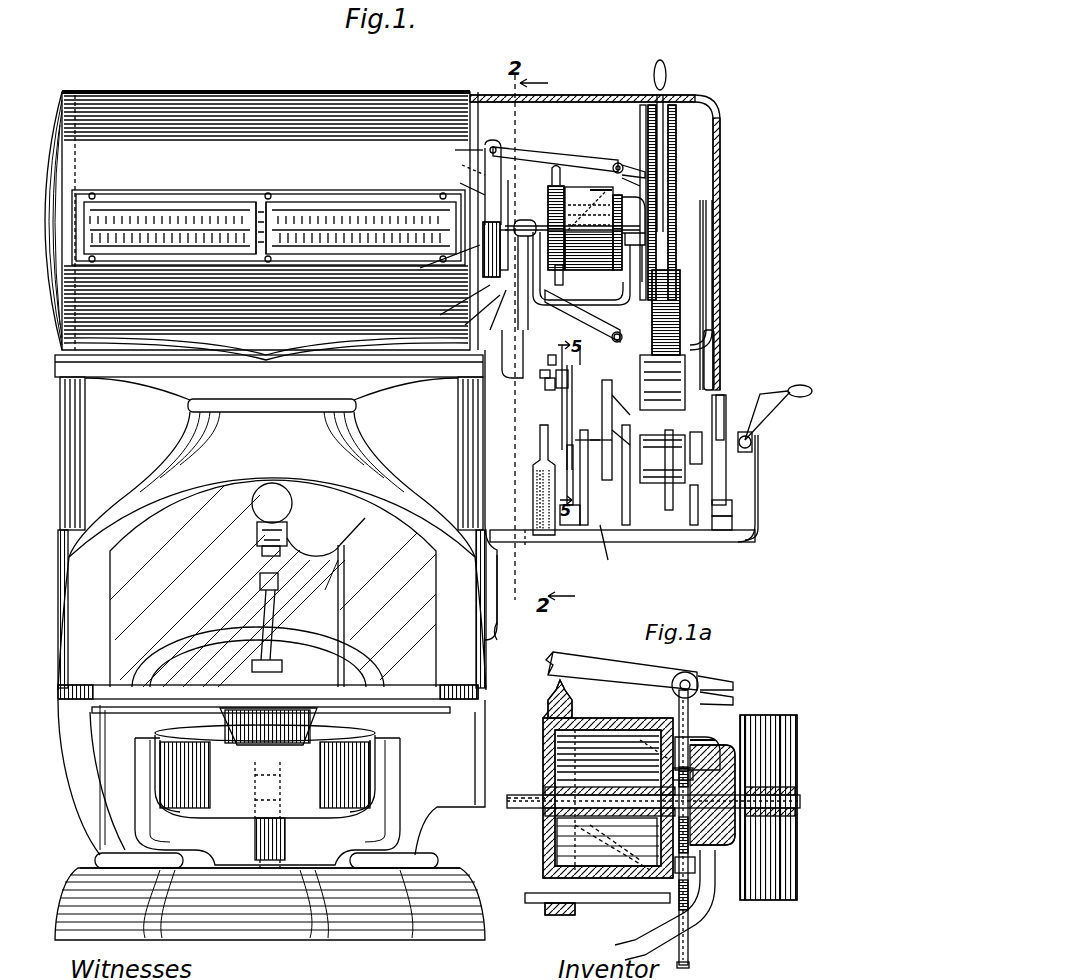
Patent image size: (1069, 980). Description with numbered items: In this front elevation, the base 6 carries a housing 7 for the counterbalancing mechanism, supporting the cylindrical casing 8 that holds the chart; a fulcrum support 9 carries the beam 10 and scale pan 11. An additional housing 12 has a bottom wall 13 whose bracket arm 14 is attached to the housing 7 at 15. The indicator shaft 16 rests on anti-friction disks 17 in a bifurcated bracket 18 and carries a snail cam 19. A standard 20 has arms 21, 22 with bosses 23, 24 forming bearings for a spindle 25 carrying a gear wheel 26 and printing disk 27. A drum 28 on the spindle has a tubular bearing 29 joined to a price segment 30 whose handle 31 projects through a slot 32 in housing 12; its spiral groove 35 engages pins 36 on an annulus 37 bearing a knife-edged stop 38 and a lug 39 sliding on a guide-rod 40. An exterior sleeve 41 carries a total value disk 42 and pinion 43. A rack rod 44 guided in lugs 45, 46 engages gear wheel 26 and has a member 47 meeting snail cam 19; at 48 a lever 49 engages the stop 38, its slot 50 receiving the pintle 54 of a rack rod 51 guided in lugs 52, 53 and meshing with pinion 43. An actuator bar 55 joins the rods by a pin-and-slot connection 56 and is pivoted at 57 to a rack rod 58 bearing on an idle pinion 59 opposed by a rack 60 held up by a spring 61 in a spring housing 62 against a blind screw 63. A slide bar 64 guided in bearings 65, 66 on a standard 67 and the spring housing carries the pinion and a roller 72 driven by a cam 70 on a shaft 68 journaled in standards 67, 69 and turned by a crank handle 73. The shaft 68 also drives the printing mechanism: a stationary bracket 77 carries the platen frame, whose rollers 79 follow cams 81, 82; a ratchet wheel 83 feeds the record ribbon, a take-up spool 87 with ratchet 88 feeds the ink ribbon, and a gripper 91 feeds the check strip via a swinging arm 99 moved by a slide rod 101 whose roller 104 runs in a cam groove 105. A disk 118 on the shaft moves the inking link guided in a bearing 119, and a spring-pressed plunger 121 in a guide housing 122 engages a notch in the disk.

In FIG. 1, the base 6 is at (462, 890).
In FIG. 1, the housing 7 is at (478, 692).
In FIG. 1, the cylindrical casing 8 is at (70, 96).
In FIG. 1, the fulcrum support 9 is at (400, 790).
In FIG. 1, the beam 10 is at (355, 730).
In FIG. 1, the scale pan 11 is at (60, 655).
In FIG. 1, the additional housing 12 is at (585, 95).
In FIG. 1, the bottom wall 13 is at (632, 542).
In FIG. 1, the bracket arm 14 is at (497, 575).
In FIG. 1, the attachment point 15 is at (500, 634).
In FIG. 1, the shaft 16 is at (235, 265).
In FIG. 1, the anti-friction disks 17 is at (408, 300).
In FIG. 1, the bifurcated bracket 18 is at (452, 308).
In FIG. 1, the snail cam 19 is at (465, 163).
In FIG. 1, the standard 20 is at (545, 385).
In FIG. 1, the arm of standard 21 is at (494, 316).
In FIG. 1, the arm of standard 22 is at (622, 332).
In FIG. 1A, the arm of standard 22 is at (705, 935).
In FIG. 1, the boss 23 is at (523, 218).
In FIG. 1, the boss 24 is at (622, 210).
In FIG. 1A, the boss 24 is at (655, 749).
In FIG. 1, the spindle 25 is at (510, 200).
In FIG. 1A, the spindle 25 is at (527, 808).
In FIG. 1, the gear wheel 26 is at (502, 232).
In FIG. 1, the printing disk 27 is at (658, 140).
In FIG. 1A, the printing disk 27 is at (790, 715).
In FIG. 1, the drum 28 is at (612, 186).
In FIG. 1A, the drum 28 is at (625, 730).
In FIG. 1, the tubular bearing 29 is at (645, 250).
In FIG. 1A, the tubular bearing 29 is at (708, 748).
In FIG. 1, the segment 30 is at (703, 240).
In FIG. 1A, the segment 30 is at (775, 900).
In FIG. 1, the handle 31 is at (665, 55).
In FIG. 1, the slot 32 is at (676, 110).
In FIG. 1, the spiral groove 35 is at (585, 186).
In FIG. 1A, the spiral groove 35 is at (612, 840).
In FIG. 1, the pin 36 is at (558, 266).
In FIG. 1A, the pin 36 is at (540, 796).
In FIG. 1, the annulus 37 is at (557, 165).
In FIG. 1A, the annulus 37 is at (545, 712).
In FIG. 1, the knife-edged stop 38 is at (565, 185).
In FIG. 1A, the knife-edged stop 38 is at (572, 694).
In FIG. 1, the perforated lug 39 is at (552, 284).
In FIG. 1A, the perforated lug 39 is at (552, 915).
In FIG. 1, the guide-rod 40 is at (581, 268).
In FIG. 1A, the guide-rod 40 is at (596, 903).
In FIG. 1, the exterior sleeve 41 is at (712, 270).
In FIG. 1A, the exterior sleeve 41 is at (712, 795).
In FIG. 1, the total value disk 42 is at (648, 170).
In FIG. 1A, the total value disk 42 is at (752, 716).
In FIG. 1, the pinion 43 is at (645, 225).
In FIG. 1A, the pinion 43 is at (673, 775).
In FIG. 1, the reciprocating rod 44 is at (469, 317).
In FIG. 1, the lug 45 is at (440, 264).
In FIG. 1, the lug 46 is at (492, 222).
In FIG. 1, the laterally projecting member 47 is at (459, 141).
In FIG. 1, the pivot 48 is at (493, 142).
In FIG. 1, the lever 49 is at (527, 150).
In FIG. 1A, the lever 49 is at (602, 657).
In FIG. 1, the slot 50 is at (622, 164).
In FIG. 1A, the slot 50 is at (735, 682).
In FIG. 1, the rack rod 51 is at (628, 335).
In FIG. 1A, the rack rod 51 is at (690, 964).
In FIG. 1, the lug 52 is at (682, 290).
In FIG. 1A, the lug 52 is at (679, 900).
In FIG. 1, the lug 53 is at (640, 197).
In FIG. 1A, the lug 53 is at (708, 738).
In FIG. 1, the pintle 54 is at (627, 177).
In FIG. 1A, the pintle 54 is at (692, 675).
In FIG. 1, the actuator bar 55 is at (597, 353).
In FIG. 1, the pin and slot connection 56 is at (613, 420).
In FIG. 1, the pivot 57 is at (515, 354).
In FIG. 1, the rack rod 58 is at (542, 364).
In FIG. 1, the idle pinion 59 is at (535, 382).
In FIG. 1, the rack 60 is at (567, 400).
In FIG. 1, the spring 61 is at (538, 492).
In FIG. 1, the spring housing 62 is at (533, 466).
In FIG. 1, the blind screw 63 is at (540, 542).
In FIG. 1, the slide bar 64 is at (593, 448).
In FIG. 1, the bearing 65 is at (573, 373).
In FIG. 1, the bearing 66 is at (575, 478).
In FIG. 1, the standard 67 is at (580, 510).
In FIG. 1, the shaft 68 is at (752, 445).
In FIG. 1, the second standard 69 is at (758, 495).
In FIG. 1, the cam 70 is at (591, 418).
In FIG. 1, the roller 72 is at (560, 400).
In FIG. 1, the crank handle 73 is at (790, 396).
In FIG. 1, the stationary bracket 77 is at (740, 420).
In FIG. 1, the roller 79 is at (726, 418).
In FIG. 1, the cam 81 is at (630, 505).
In FIG. 1, the cam 82 is at (688, 505).
In FIG. 1, the ratchet wheel 83 is at (669, 470).
In FIG. 1, the take-up spool 87 is at (662, 459).
In FIG. 1, the ratchet 88 is at (700, 435).
In FIG. 1, the toothed gripper 91 is at (650, 355).
In FIG. 1, the swinging arm 99 is at (605, 543).
In FIG. 1, the slide rod 101 is at (625, 425).
In FIG. 1, the roller 104 is at (600, 429).
In FIG. 1, the cam groove 105 is at (624, 396).
In FIG. 1, the disk 118 is at (724, 400).
In FIG. 1, the bearing 119 is at (714, 340).
In FIG. 1, the spring-pressed plunger 121 is at (732, 508).
In FIG. 1, the guide housing 122 is at (732, 524).